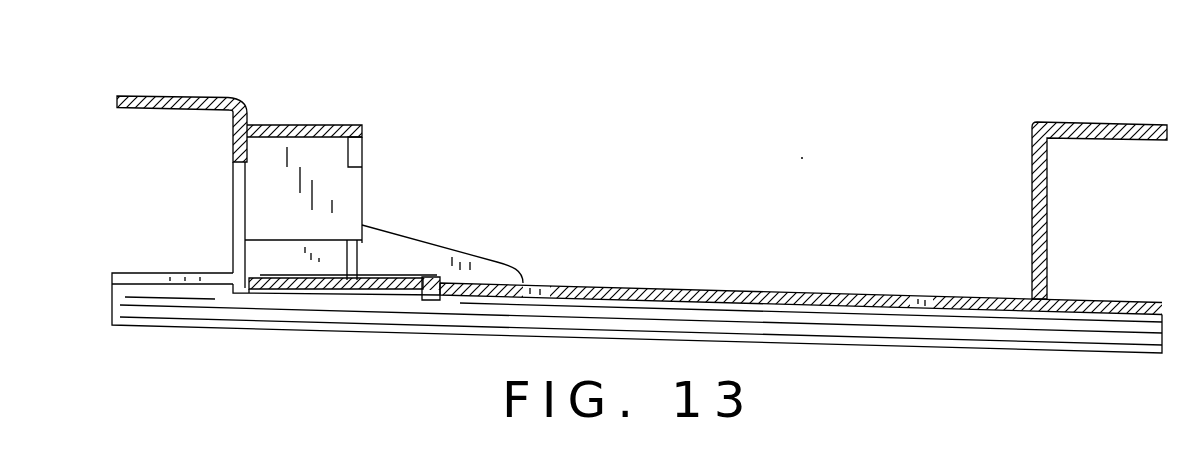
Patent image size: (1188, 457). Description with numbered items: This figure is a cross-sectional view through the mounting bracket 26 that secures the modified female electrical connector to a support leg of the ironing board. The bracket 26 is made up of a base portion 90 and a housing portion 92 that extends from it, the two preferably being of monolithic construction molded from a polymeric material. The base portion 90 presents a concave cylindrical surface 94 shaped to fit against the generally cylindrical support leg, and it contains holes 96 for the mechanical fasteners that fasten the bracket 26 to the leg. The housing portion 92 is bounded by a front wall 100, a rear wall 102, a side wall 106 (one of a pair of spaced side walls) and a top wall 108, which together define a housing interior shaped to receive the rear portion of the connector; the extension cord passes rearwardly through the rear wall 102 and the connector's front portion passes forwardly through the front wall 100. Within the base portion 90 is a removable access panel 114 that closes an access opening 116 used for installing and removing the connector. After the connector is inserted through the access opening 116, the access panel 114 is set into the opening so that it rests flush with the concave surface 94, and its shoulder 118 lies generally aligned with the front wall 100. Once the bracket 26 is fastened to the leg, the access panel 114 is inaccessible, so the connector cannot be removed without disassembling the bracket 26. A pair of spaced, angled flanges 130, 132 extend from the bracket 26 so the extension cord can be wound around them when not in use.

The mounting bracket 26 is at (810, 157).
The base portion 90 is at (721, 275).
The housing portion 92 is at (371, 122).
The concave cylindrical surface 94 is at (843, 318).
The holes 96 is at (538, 285).
The front wall 100 is at (355, 152).
The rear wall 102 is at (235, 148).
The side wall 106 is at (332, 158).
The top wall 108 is at (288, 125).
The removable access panel 114 is at (387, 278).
The access opening 116 is at (425, 277).
The shoulder 118 is at (350, 260).
The flange 130 is at (140, 96).
The flange 132 is at (1100, 122).